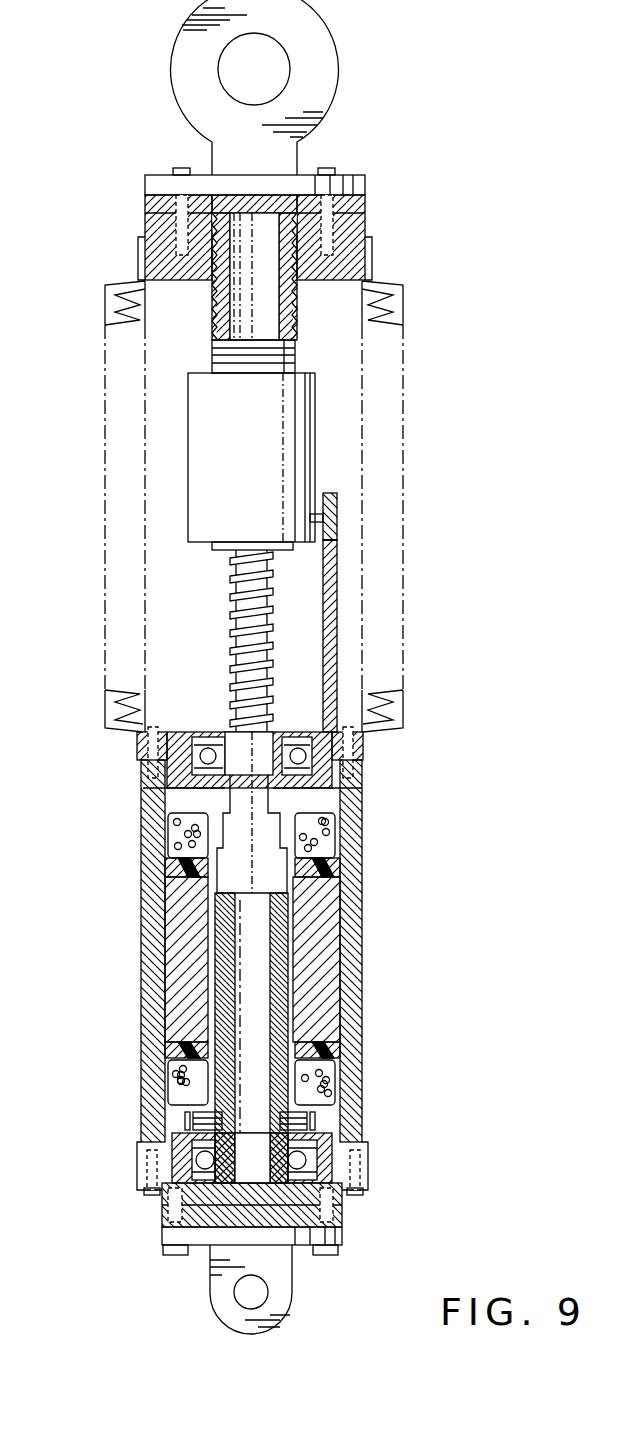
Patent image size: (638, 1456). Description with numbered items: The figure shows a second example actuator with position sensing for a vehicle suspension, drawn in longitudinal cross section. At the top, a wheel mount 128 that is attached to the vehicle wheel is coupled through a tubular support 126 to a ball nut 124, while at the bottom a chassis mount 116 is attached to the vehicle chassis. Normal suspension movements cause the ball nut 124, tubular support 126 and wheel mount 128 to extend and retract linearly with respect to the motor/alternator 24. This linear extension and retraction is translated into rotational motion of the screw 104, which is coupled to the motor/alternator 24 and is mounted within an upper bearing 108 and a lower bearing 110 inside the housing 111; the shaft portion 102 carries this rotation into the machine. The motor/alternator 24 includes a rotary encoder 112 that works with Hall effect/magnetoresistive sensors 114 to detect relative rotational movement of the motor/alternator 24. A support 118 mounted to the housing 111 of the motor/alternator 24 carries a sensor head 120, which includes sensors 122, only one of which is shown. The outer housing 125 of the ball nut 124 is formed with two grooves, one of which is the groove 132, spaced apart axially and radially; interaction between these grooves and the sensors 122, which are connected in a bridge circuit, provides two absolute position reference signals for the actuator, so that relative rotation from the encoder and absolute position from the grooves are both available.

The motor/alternator 24 is at (384, 938).
The shaft 102 is at (237, 742).
The screw 104 is at (222, 648).
The bearing 108 is at (308, 768).
The bearing 110 is at (193, 1174).
The housing 111 is at (351, 1028).
The rotary encoder 112 is at (307, 1118).
The Hall effect/magnetoresistive sensors 114 is at (187, 1122).
The chassis mount 116 is at (222, 1296).
The support 118 is at (329, 610).
The sensor head 120 is at (337, 537).
The sensors 122 is at (331, 503).
The ball nut 124 is at (176, 386).
The outer housing 125 is at (200, 468).
The tubular support 126 is at (215, 344).
The wheel mount 128 is at (313, 63).
The groove 132 is at (331, 520).